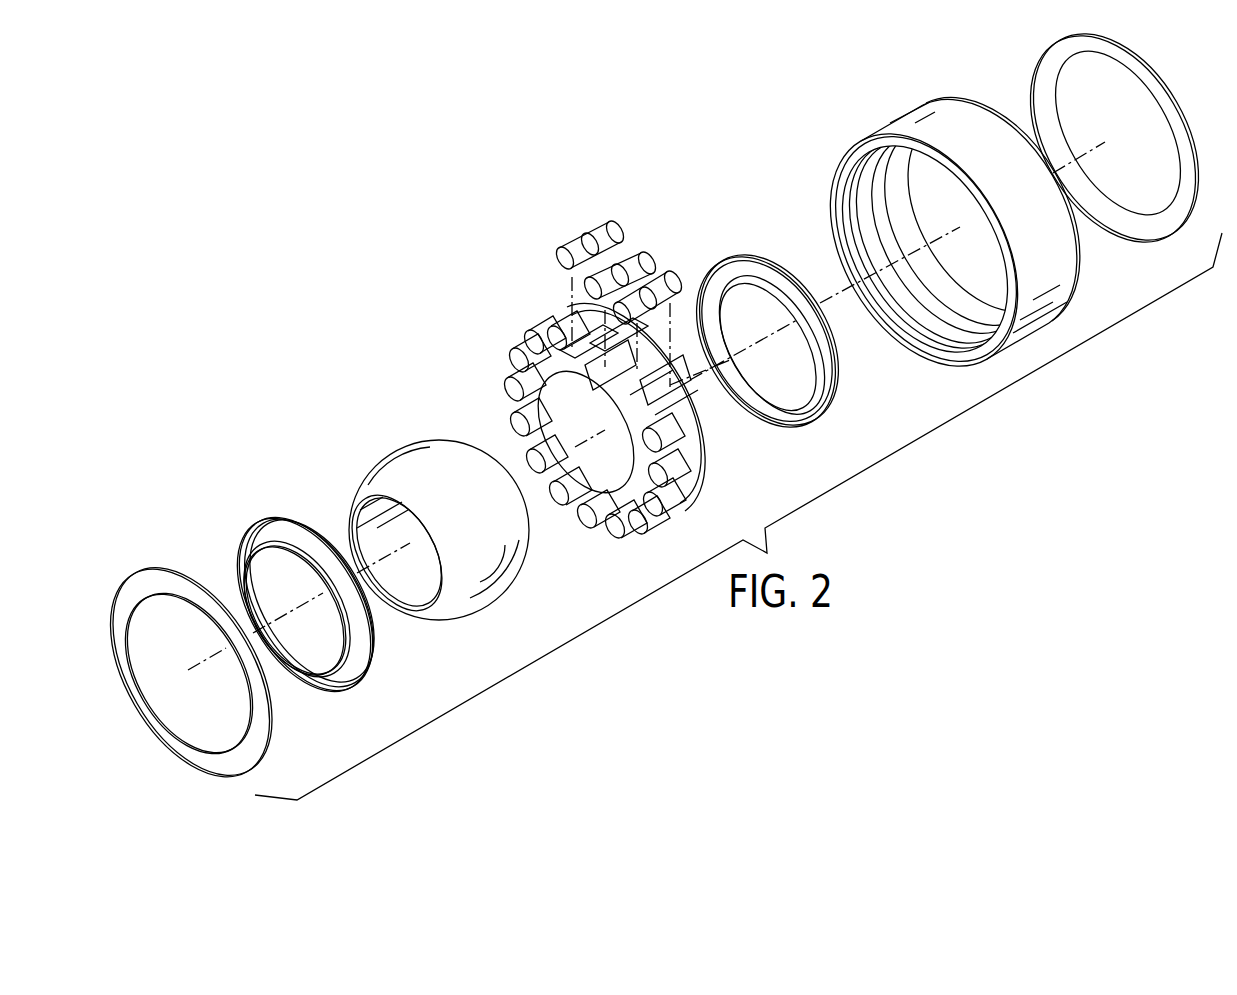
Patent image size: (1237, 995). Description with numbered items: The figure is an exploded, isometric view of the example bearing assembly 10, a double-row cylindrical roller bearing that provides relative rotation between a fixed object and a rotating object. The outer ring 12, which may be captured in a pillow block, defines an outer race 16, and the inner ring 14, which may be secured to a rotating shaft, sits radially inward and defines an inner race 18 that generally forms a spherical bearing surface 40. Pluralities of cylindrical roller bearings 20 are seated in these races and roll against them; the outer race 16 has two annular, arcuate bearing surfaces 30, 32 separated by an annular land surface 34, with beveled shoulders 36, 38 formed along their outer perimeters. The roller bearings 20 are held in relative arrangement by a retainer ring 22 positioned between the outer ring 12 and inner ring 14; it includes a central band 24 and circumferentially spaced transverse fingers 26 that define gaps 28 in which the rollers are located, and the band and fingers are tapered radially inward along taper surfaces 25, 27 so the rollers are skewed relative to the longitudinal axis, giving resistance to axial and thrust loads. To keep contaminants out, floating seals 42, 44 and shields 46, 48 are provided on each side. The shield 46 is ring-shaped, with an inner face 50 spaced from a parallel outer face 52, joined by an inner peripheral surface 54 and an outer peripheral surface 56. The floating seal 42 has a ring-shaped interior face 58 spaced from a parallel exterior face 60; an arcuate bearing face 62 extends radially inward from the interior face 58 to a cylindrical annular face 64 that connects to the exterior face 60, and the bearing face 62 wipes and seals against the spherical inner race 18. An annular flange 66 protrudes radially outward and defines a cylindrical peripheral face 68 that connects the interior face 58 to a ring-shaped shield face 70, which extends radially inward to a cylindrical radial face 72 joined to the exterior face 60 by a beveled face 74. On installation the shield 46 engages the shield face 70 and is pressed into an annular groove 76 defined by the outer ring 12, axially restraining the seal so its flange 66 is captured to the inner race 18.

The bearing assembly 10 is at (263, 170).
The outer ring 12 is at (944, 243).
The inner ring 14 is at (431, 529).
The outer race 16 is at (930, 330).
The inner race 18 is at (488, 612).
The cylindrical roller bearings 20 is at (607, 228).
The retainer ring 22 is at (619, 385).
The central band 24 is at (657, 398).
The taper surface 25 is at (578, 350).
The transverse fingers 26 is at (668, 352).
The taper surface 27 is at (568, 333).
The gaps 28 is at (598, 372).
The bearing surface 30 is at (838, 192).
The bearing surface 32 is at (902, 201).
The land surface 34 is at (915, 300).
The beveled shoulder 36 is at (845, 232).
The beveled shoulder 38 is at (960, 290).
The spherical bearing surface 40 is at (479, 561).
The floating seal 42 is at (324, 601).
The floating seal 44 is at (767, 337).
The shield 46 is at (190, 667).
The shield 48 is at (1098, 146).
The inner face 50 is at (1157, 228).
The outer face 52 is at (152, 731).
The inner peripheral surface 54 is at (140, 684).
The outer peripheral surface 56 is at (205, 588).
The interior face 58 is at (725, 267).
The exterior face 60 is at (303, 677).
The arcuate bearing face 62 is at (284, 654).
The cylindrical annular face 64 is at (257, 615).
The annular flange 66 is at (352, 695).
The cylindrical peripheral face 68 is at (317, 537).
The shield face 70 is at (253, 531).
The radial face 72 is at (365, 617).
The beveled face 74 is at (357, 649).
The annular groove 76 is at (860, 306).